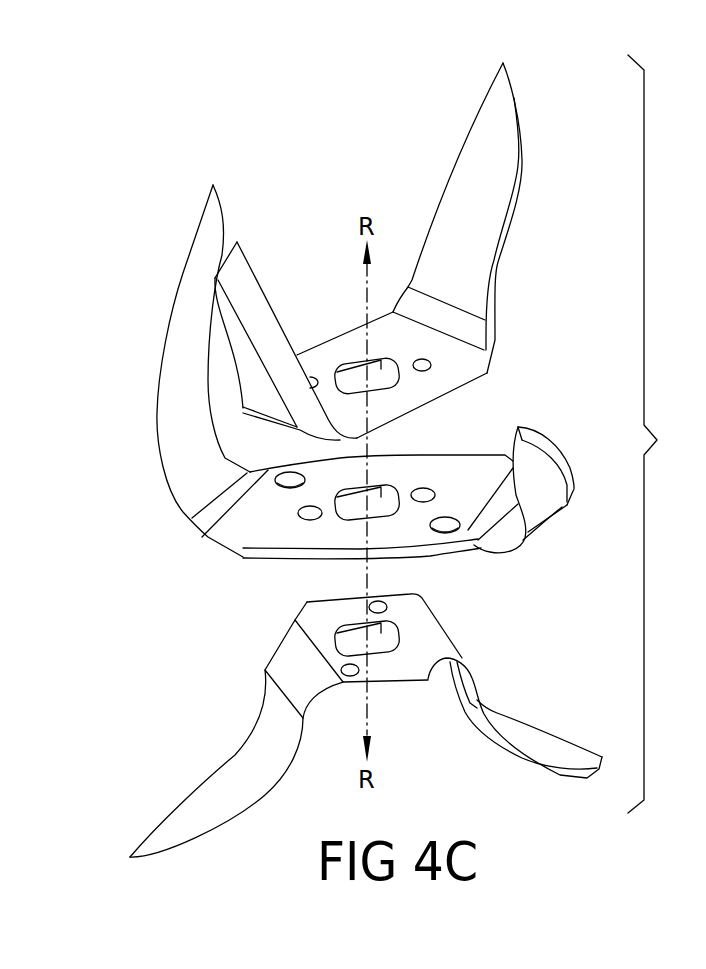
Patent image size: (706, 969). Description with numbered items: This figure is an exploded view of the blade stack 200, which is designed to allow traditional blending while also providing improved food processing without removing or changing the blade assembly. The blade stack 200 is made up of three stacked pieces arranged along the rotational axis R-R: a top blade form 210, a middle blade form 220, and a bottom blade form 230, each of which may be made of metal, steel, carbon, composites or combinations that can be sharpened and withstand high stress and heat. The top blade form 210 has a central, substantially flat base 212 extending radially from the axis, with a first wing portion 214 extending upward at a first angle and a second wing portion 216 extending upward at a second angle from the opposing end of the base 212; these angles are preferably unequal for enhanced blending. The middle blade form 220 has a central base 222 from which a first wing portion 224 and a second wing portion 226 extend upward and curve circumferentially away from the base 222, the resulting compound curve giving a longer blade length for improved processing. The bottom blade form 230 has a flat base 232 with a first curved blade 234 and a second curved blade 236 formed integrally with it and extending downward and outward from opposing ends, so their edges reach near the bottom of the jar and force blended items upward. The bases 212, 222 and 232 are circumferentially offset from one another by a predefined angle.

The blade stack 200 is at (667, 434).
The top blade form 210 is at (415, 251).
The base 212 is at (447, 373).
The first wing portion 214 is at (522, 165).
The second wing portion 216 is at (250, 260).
The middle blade form 220 is at (315, 376).
The central base 222 is at (233, 532).
The first wing portion 224 is at (540, 490).
The second wing portion 226 is at (180, 288).
The bottom blade form 230 is at (362, 725).
The base 232 is at (310, 616).
The first curved blade 234 is at (532, 737).
The second curved blade 236 is at (197, 771).